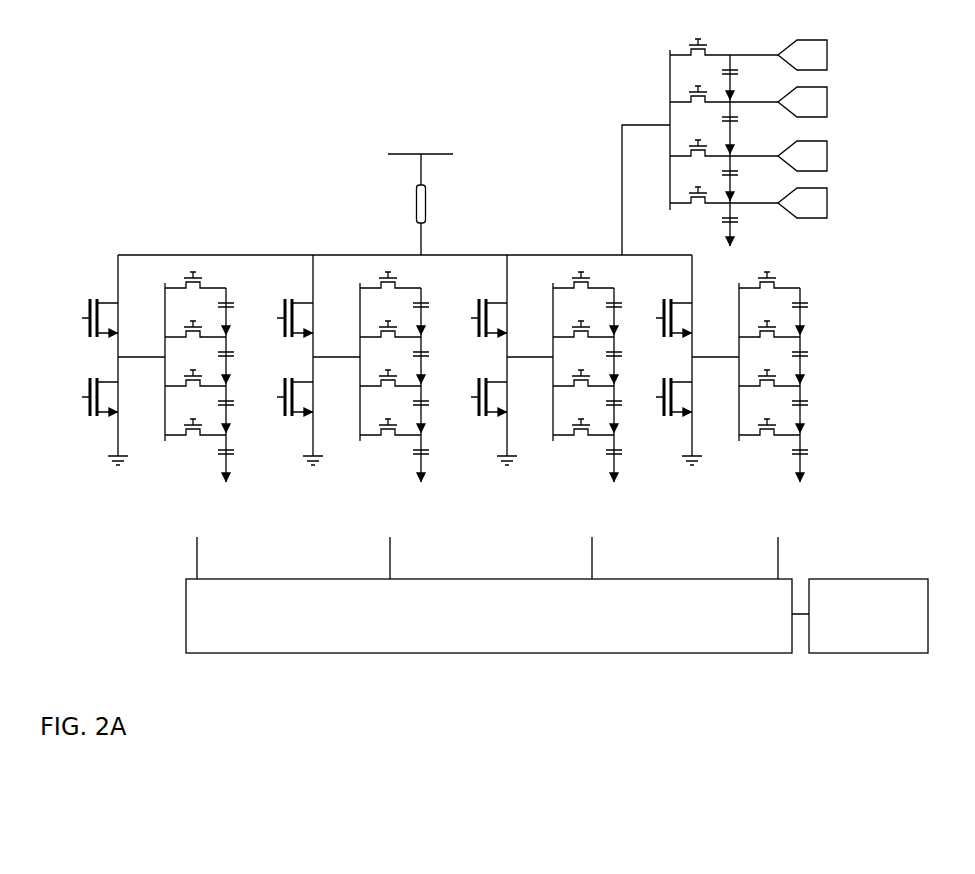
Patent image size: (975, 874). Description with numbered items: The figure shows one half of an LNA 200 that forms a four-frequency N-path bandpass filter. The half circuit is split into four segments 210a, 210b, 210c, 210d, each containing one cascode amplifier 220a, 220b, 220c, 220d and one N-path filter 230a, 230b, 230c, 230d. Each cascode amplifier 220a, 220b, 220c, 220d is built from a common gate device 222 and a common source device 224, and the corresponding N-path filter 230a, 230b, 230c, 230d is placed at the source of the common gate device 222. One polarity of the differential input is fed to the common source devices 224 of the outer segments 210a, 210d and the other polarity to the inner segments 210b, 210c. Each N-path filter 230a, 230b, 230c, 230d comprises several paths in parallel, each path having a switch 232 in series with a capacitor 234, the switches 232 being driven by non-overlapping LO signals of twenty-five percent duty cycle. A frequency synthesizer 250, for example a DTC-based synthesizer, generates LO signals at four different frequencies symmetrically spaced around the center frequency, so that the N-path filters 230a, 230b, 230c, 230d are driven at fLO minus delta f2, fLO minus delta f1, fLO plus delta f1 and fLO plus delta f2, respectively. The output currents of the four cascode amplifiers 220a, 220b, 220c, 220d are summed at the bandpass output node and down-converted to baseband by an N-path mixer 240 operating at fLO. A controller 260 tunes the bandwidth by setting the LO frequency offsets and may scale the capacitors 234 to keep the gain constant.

The LNA 200 is at (332, 156).
The N-path mixer 240 is at (646, 71).
The common gate device 222 is at (88, 300).
The common source device 224 is at (88, 414).
The cascode amplifier 220a is at (79, 355).
The cascode amplifier 220b is at (285, 361).
The cascode amplifier 220c is at (478, 361).
The cascode amplifier 220d is at (669, 368).
The N-path filter 230a is at (153, 337).
The N-path filter 230b is at (348, 337).
The N-path filter 230c is at (541, 337).
The N-path filter 230d is at (827, 366).
The switch 232 is at (199, 280).
The capacitor 234 is at (236, 305).
The segment 210a is at (119, 396).
The segment 210b is at (339, 396).
The segment 210c is at (535, 403).
The segment 210d is at (750, 400).
The frequency synthesizer 250 is at (792, 578).
The controller 260 is at (858, 578).